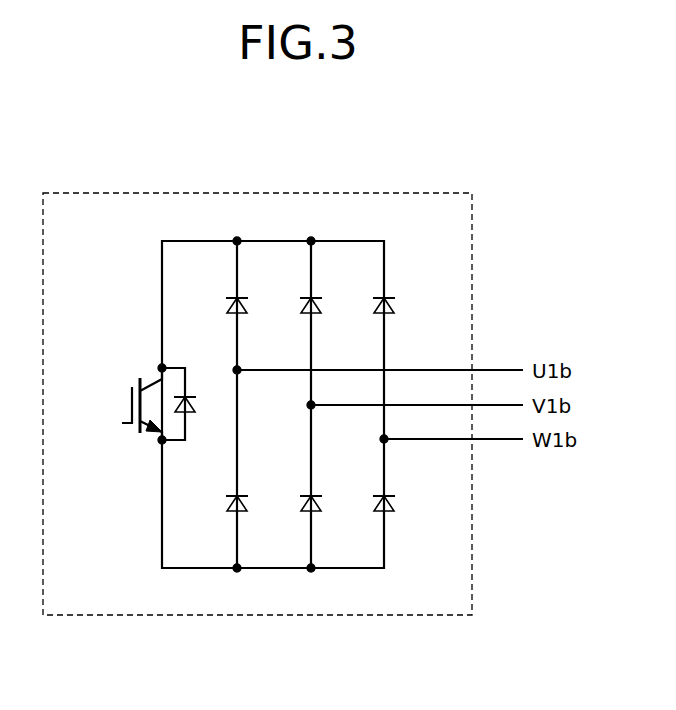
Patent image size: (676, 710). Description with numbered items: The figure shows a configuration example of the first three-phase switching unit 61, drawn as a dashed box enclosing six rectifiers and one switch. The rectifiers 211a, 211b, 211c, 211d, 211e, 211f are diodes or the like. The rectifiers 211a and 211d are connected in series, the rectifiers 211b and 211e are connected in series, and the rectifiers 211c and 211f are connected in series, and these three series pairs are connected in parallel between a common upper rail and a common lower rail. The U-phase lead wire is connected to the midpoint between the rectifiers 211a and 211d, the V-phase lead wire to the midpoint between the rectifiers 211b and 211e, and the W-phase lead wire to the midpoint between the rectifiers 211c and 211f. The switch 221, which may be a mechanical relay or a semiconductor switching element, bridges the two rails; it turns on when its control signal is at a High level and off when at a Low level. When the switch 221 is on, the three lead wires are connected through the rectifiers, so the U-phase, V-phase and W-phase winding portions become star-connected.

The first three-phase switching unit 61 is at (147, 193).
The rectifier 211a is at (245, 296).
The rectifier 211b is at (318, 296).
The rectifier 211c is at (392, 296).
The rectifier 211d is at (246, 514).
The rectifier 211e is at (320, 514).
The rectifier 211f is at (392, 514).
The switch 221 is at (126, 391).